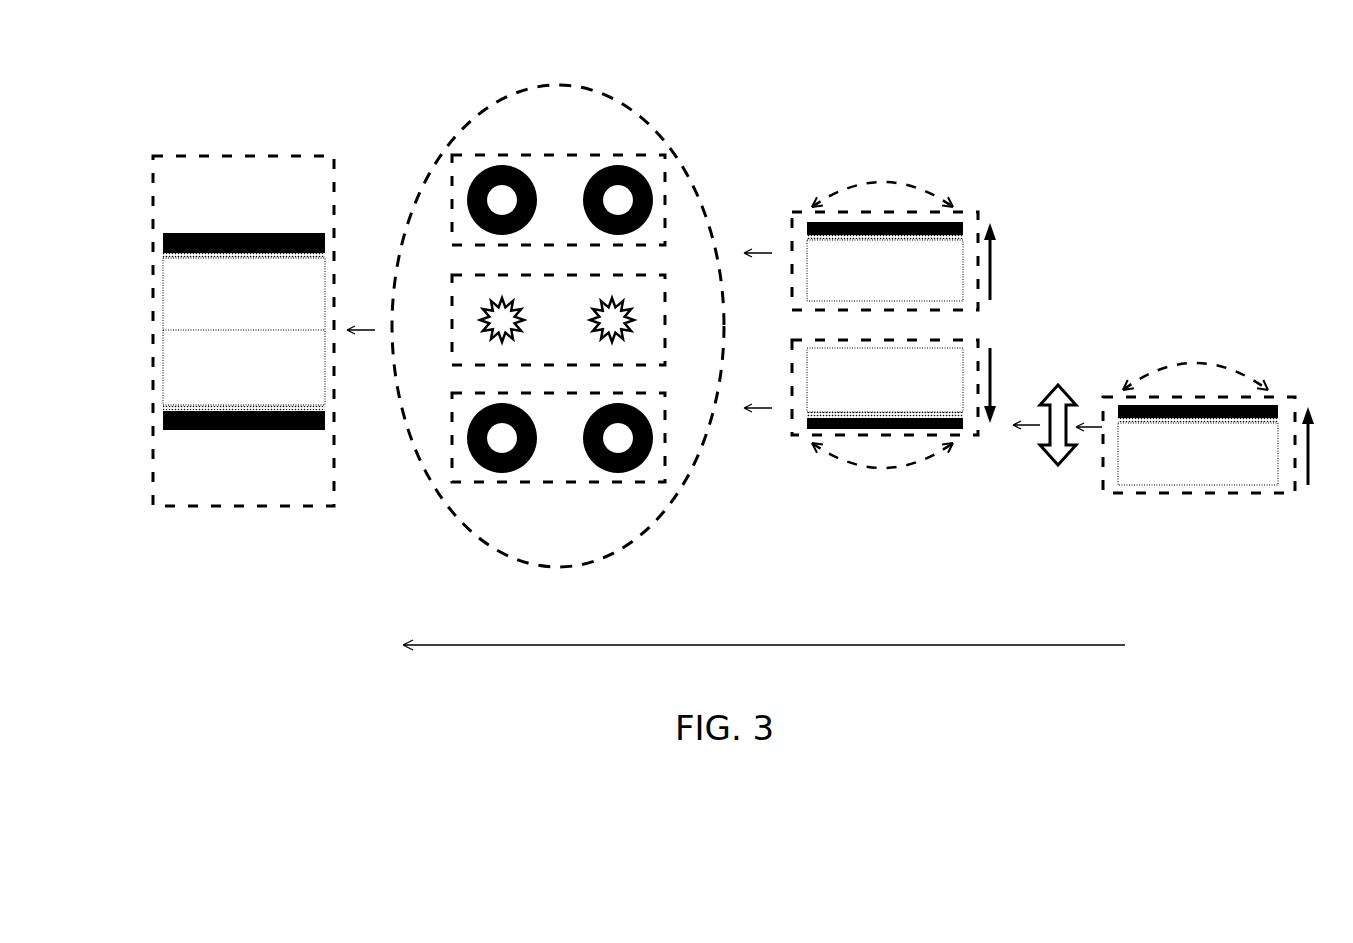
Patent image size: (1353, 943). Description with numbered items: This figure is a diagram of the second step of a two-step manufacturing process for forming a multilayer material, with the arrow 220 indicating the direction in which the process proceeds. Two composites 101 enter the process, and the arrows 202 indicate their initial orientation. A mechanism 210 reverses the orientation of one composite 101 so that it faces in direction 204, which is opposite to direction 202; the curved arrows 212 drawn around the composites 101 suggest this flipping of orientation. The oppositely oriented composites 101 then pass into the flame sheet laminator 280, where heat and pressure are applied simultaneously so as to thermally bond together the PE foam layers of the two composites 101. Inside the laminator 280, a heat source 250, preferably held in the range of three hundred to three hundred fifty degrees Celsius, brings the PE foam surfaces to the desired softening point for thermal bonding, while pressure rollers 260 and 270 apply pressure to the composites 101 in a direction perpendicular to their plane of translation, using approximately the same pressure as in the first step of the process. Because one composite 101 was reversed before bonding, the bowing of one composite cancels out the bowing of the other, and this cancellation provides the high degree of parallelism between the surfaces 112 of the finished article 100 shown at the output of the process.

The article 100 is at (276, 151).
The surfaces 112 is at (246, 233).
The composites 101 is at (892, 212).
The flame sheet laminator 280 is at (563, 85).
The pressure roller 260 is at (598, 155).
The heat source 250 is at (663, 275).
The pressure roller 270 is at (610, 482).
The flipping direction 212 is at (930, 190).
The direction 202 is at (993, 275).
The direction 204 is at (993, 380).
The mechanism 210 is at (1058, 470).
The arrow 220 is at (763, 645).